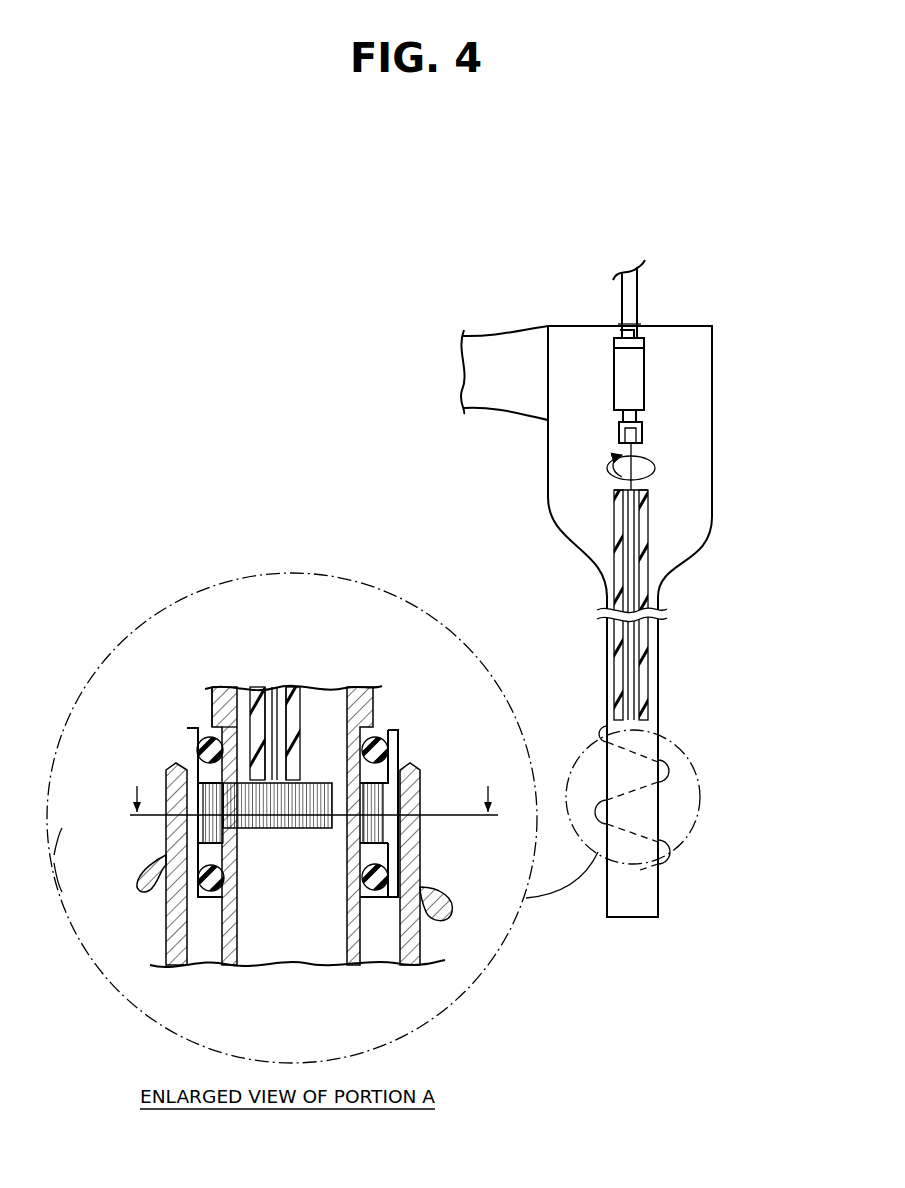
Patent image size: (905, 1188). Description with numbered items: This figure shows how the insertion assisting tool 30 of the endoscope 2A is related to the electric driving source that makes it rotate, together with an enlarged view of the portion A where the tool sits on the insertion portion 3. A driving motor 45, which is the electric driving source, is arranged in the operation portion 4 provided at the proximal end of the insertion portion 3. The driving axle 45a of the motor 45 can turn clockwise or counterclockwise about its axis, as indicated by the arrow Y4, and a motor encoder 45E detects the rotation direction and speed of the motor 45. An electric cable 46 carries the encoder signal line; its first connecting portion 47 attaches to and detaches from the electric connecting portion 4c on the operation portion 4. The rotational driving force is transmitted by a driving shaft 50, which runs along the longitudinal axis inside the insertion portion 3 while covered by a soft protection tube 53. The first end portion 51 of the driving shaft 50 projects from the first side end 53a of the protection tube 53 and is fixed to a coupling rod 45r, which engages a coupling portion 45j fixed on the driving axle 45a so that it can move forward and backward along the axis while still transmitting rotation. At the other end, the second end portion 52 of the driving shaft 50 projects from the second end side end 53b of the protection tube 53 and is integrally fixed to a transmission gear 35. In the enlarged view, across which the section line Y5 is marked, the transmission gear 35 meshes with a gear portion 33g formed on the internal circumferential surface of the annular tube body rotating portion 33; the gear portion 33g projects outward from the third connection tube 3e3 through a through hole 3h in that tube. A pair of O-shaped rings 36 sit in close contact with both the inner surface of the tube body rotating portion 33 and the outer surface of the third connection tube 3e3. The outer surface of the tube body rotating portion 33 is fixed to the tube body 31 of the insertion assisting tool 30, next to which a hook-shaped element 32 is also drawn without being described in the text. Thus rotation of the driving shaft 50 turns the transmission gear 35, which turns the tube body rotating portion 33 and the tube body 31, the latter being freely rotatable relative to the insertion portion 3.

The endoscope 2A is at (690, 263).
The operation portion 4 is at (716, 380).
The electric cable 46 is at (612, 290).
The first connecting portion 47 is at (623, 332).
The electric connecting portion 4c is at (626, 326).
The driving motor 45 is at (625, 395).
The motor encoder 45E is at (640, 345).
The driving axle 45a is at (630, 415).
The coupling portion 45j is at (641, 430).
The coupling rod 45r is at (638, 450).
The first end portion 51 is at (618, 450).
The arrow Y4 is at (652, 478).
The protection tube 53 is at (619, 663).
The first side end 53a is at (614, 491).
The driving shaft 50 is at (638, 643).
The insertion portion 3 is at (662, 705).
The portion A is at (704, 800).
The second end side end 53b is at (222, 700).
The second end portion 52 is at (303, 780).
The third connection tube 3e3 is at (212, 702).
The transmission gear 35 is at (278, 828).
The O-shaped ring 36 is at (388, 742).
The tube body rotating portion 33 is at (383, 798).
The through hole 3h is at (213, 778).
The gear portion 33g is at (190, 897).
The tube body 31 is at (168, 838).
The engaging hook 32 is at (140, 885).
The insertion assisting tool 30 is at (54, 858).
The section line Y5 is at (313, 814).